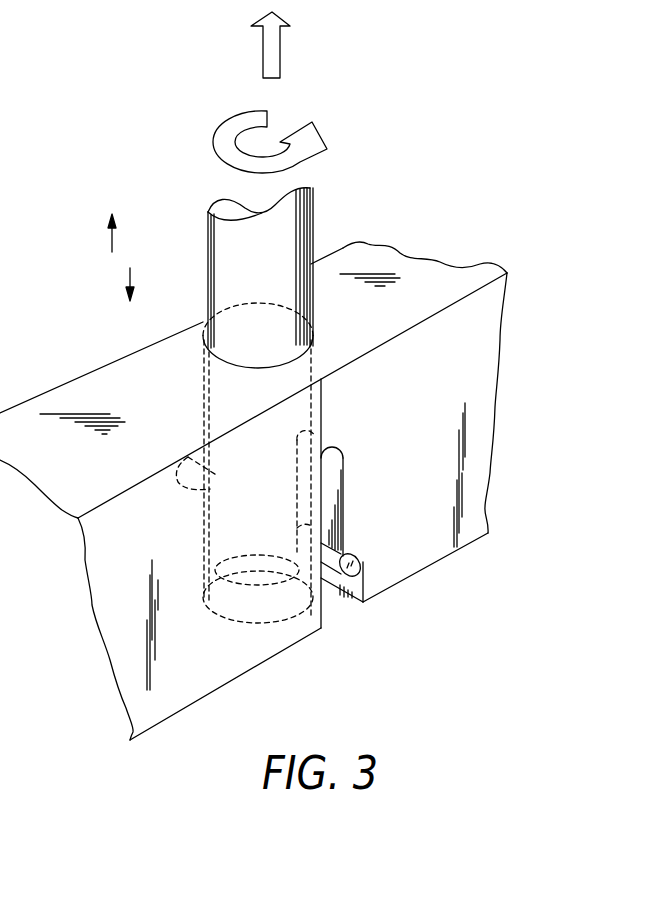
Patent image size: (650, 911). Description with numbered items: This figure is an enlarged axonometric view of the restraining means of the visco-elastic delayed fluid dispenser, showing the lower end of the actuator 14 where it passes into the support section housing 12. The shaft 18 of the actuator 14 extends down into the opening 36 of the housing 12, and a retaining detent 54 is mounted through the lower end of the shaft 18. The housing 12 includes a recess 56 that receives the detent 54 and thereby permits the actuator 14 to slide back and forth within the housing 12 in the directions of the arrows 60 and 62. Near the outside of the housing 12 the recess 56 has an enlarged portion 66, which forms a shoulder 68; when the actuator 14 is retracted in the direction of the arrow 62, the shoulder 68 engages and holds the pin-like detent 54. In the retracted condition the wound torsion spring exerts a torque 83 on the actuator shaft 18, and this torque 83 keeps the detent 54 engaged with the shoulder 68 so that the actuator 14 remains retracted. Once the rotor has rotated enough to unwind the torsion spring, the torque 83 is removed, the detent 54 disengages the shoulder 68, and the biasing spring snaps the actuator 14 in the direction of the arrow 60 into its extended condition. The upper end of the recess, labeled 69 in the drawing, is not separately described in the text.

The support section housing 12 is at (475, 505).
The actuator 14 is at (312, 235).
The shaft 18 is at (312, 201).
The opening 36 is at (312, 326).
The retaining detent 54 is at (364, 569).
The recess 56 is at (340, 500).
The arrow 60 is at (110, 238).
The arrow 62 is at (127, 283).
The enlarged portion 66 is at (332, 612).
The shoulder 68 is at (353, 559).
The upper end of slot 69 is at (344, 456).
The torque 83 is at (222, 128).